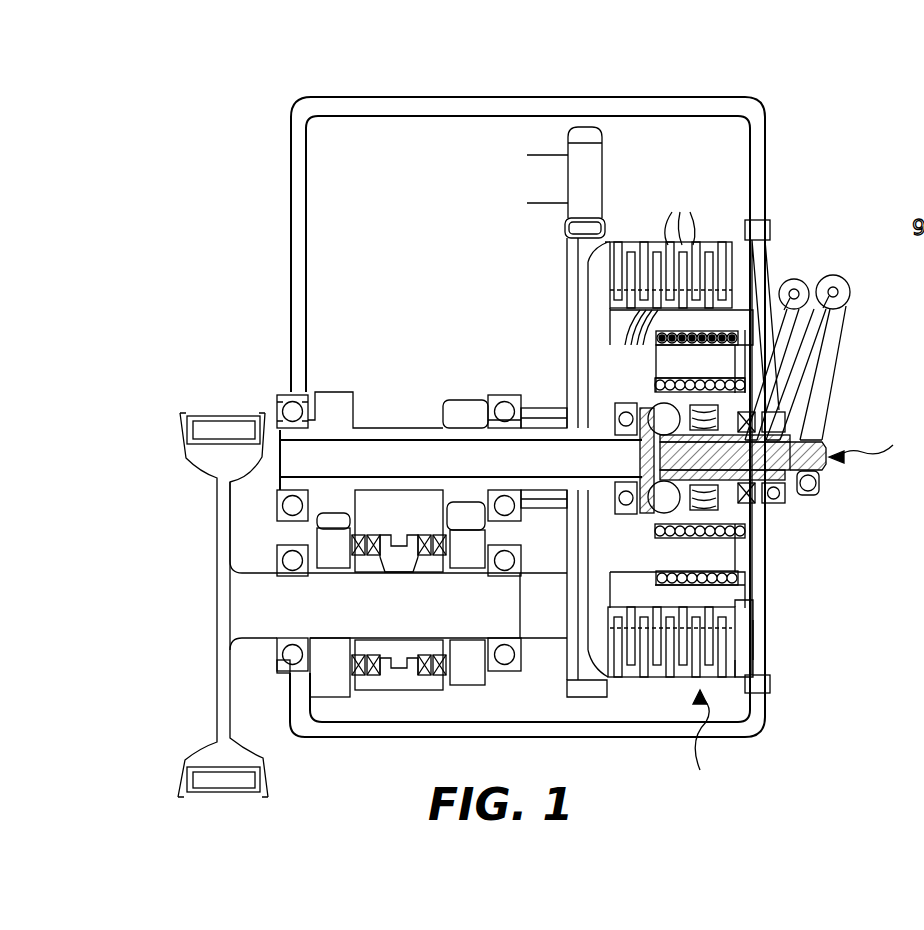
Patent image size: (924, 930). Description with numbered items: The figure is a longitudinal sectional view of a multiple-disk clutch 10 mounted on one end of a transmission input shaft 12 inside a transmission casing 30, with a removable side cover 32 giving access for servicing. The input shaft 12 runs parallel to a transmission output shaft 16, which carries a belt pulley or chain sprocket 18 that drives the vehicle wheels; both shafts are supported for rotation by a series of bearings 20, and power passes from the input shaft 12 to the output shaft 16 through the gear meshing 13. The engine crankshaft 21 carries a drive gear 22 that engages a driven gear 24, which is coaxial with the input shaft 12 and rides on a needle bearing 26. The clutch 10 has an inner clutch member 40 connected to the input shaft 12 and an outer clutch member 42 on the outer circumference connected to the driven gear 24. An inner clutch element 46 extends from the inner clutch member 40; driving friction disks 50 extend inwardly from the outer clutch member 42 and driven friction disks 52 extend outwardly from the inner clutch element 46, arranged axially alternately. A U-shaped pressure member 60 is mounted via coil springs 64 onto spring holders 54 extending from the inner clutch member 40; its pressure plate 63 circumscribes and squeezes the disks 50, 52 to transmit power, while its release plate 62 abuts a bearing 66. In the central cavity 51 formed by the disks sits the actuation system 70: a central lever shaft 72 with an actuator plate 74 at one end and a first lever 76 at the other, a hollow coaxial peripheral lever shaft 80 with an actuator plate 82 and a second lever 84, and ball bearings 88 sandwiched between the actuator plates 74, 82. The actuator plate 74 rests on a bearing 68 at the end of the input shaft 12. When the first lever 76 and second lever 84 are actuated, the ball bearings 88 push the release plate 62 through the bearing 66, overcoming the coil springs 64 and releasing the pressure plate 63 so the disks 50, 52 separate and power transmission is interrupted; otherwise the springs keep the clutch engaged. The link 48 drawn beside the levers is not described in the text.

The multiple-disk clutch 10 is at (707, 737).
The transmission input shaft 12 is at (388, 434).
The gear meshing 13 is at (446, 524).
The transmission output shaft 16 is at (258, 620).
The belt pulley or chain sprocket 18 is at (250, 760).
The bearings 20 is at (284, 404).
The crankshaft 21 is at (538, 170).
The drive gear 22 is at (604, 168).
The driven gear 24 is at (568, 283).
The needle bearing 26 is at (548, 426).
The transmission casing 30 is at (632, 728).
The removable side cover 32 is at (748, 648).
The inner clutch member 40 is at (588, 318).
The outer clutch member 42 is at (628, 240).
The inner clutch element 46 is at (728, 290).
The link 48 is at (735, 265).
The driving friction disks 50 is at (679, 215).
The central cavity 51 is at (620, 392).
The driven friction disks 52 is at (678, 350).
The spring holders 54 is at (760, 350).
The pressure member 60 is at (745, 608).
The release plate 62 is at (745, 536).
The pressure plate 63 is at (745, 670).
The coil springs 64 is at (745, 584).
The bearing 66 is at (748, 508).
The bearing 68 is at (612, 440).
The actuation system 70 is at (875, 446).
The central lever shaft 72 is at (818, 470).
The actuator plate 74 is at (648, 512).
The first lever 76 is at (820, 398).
The peripheral lever shaft 80 is at (764, 420).
The actuator plate 82 is at (704, 512).
The second lever 84 is at (790, 372).
The ball bearings 88 is at (662, 436).